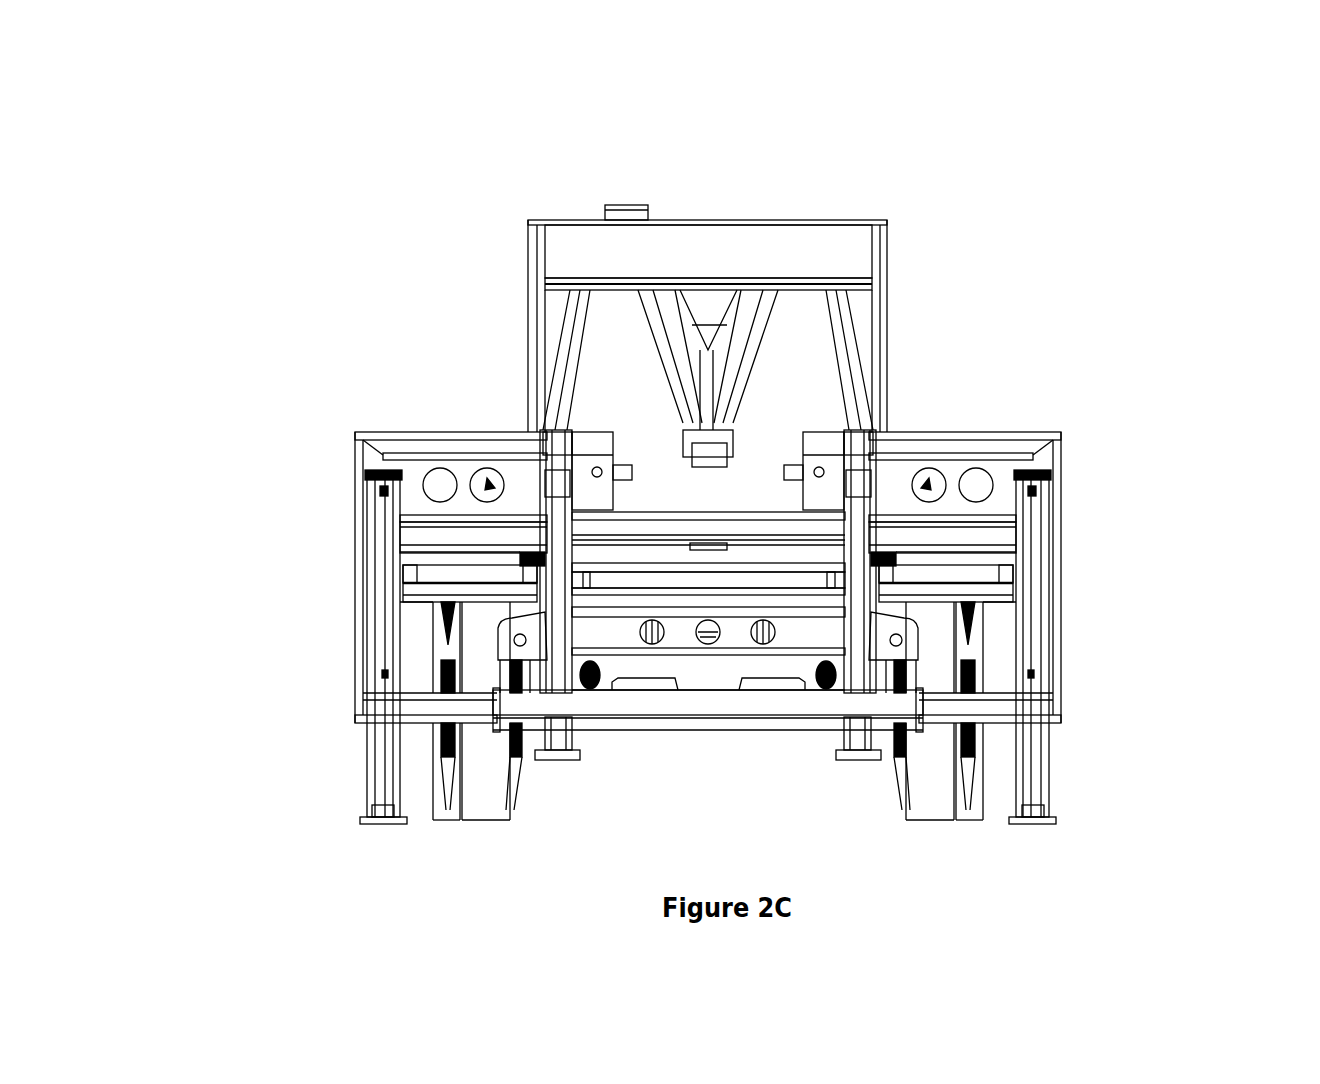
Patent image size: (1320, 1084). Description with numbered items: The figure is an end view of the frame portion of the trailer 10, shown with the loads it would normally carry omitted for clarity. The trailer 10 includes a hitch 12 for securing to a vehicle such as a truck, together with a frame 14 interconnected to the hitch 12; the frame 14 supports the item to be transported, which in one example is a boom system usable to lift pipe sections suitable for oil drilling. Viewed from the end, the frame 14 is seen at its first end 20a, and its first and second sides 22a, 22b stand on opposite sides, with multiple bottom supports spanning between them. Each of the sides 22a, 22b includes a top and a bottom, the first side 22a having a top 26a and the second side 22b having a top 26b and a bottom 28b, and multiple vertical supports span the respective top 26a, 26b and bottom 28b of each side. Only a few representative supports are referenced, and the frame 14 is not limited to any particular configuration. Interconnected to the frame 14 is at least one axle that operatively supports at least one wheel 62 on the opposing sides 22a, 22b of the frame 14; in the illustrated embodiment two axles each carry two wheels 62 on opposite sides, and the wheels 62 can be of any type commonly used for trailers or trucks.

The trailer 10 is at (215, 133).
The hitch 12 is at (885, 240).
The frame 14 is at (1170, 165).
The first end 20a is at (1108, 260).
The first side 22a is at (365, 585).
The second side 22b is at (1057, 490).
The top 26a is at (315, 397).
The top 26b is at (1068, 405).
The bottom 28b is at (332, 738).
The wheel 62 is at (490, 803).